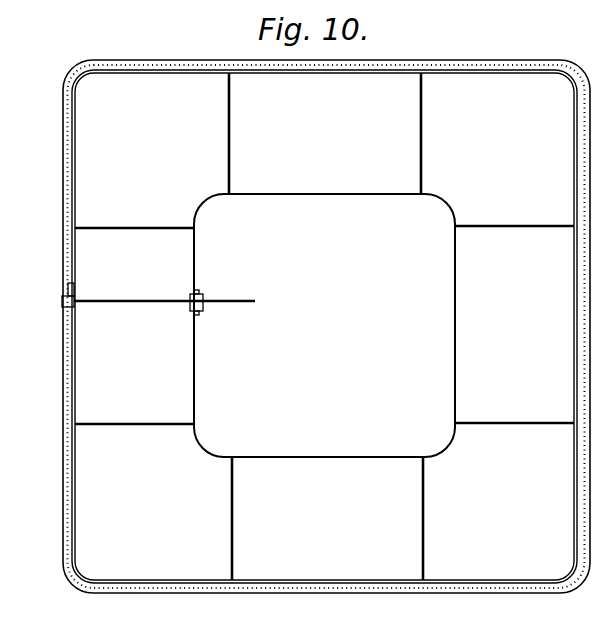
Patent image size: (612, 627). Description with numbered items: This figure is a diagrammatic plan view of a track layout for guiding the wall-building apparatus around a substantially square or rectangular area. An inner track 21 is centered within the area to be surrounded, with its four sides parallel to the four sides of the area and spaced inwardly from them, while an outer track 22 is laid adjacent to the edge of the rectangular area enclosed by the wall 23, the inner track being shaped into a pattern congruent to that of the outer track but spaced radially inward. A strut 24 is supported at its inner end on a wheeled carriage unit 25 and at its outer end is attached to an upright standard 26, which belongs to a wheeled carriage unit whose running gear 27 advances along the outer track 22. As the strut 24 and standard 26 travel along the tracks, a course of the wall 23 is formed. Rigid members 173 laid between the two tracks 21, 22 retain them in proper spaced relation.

The track 21 is at (330, 193).
The outer track 22 is at (470, 67).
The wall 23 is at (198, 62).
The strut 24 is at (152, 304).
The wheeled carriage unit 25 is at (203, 304).
The upright standard 26 is at (74, 303).
The running gear 27 is at (74, 284).
The rigid members 173 is at (423, 129).